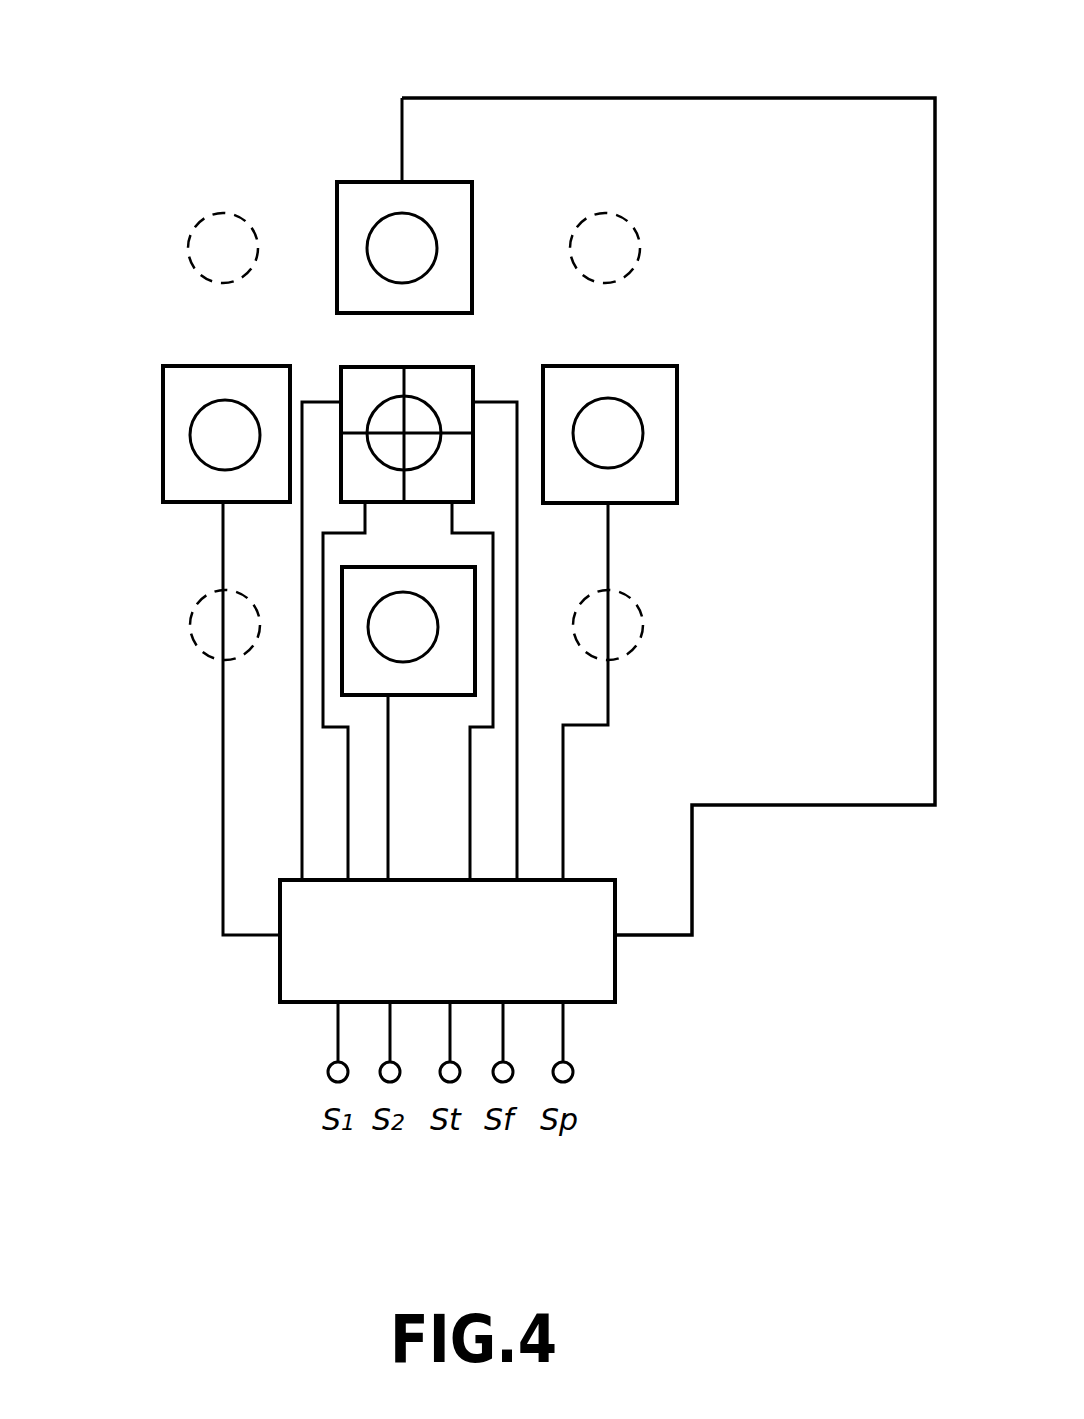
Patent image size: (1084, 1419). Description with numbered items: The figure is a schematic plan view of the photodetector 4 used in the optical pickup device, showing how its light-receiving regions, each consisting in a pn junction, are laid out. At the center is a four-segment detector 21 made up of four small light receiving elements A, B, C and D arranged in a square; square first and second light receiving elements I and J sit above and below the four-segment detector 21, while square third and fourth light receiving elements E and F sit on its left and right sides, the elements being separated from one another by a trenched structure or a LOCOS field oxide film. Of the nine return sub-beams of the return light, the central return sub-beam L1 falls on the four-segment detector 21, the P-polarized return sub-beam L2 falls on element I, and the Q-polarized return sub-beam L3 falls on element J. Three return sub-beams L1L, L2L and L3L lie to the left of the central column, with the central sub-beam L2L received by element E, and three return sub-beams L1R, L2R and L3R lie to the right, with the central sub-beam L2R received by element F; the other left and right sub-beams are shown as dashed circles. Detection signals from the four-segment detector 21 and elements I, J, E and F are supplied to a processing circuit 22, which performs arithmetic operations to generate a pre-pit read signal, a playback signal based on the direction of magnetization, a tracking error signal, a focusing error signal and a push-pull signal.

The photodetector 4 is at (698, 95).
The four-segment detector 21 is at (367, 367).
The processing circuit 22 is at (615, 976).
The central return sub-beam L1 is at (408, 398).
The return sub-beam L2 is at (380, 220).
The return sub-beam L3 is at (407, 663).
The return sub-beam L1L is at (190, 434).
The return sub-beam L1R is at (643, 431).
The central left return sub-beam L2L is at (188, 246).
The central right return sub-beam L2R is at (640, 251).
The return sub-beam L3L is at (190, 626).
The return sub-beam L3R is at (643, 613).